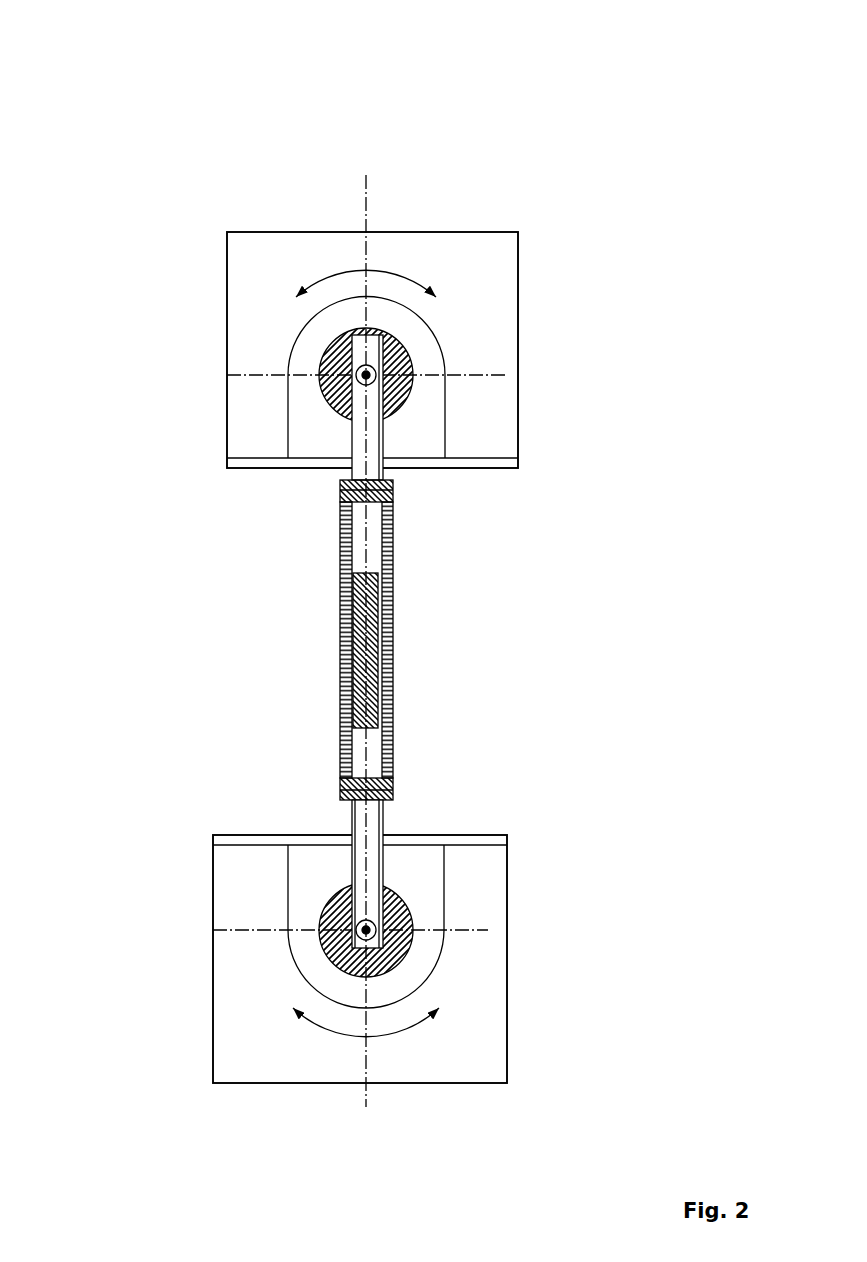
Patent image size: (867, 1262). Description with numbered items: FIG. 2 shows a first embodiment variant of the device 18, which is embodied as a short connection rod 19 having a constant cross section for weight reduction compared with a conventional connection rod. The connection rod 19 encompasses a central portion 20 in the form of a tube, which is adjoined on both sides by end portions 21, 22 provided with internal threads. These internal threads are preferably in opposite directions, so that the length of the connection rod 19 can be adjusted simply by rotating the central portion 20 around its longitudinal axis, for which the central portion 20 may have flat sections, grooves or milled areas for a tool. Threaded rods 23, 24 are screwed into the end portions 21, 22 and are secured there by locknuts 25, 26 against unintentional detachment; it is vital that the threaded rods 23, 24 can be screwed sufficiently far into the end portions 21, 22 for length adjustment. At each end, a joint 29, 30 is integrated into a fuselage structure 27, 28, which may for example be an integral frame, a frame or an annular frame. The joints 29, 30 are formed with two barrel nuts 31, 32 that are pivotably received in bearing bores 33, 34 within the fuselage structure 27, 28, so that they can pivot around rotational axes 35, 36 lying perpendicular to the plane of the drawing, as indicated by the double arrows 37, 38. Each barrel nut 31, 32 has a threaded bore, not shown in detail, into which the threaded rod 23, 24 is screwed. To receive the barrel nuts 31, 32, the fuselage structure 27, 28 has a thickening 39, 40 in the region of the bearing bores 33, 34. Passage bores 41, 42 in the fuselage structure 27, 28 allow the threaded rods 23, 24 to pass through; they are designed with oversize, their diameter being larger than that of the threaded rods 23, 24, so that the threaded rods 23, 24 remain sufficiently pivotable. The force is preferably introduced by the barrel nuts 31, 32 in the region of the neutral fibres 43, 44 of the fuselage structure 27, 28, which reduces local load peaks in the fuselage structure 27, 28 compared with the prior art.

The device 18 is at (476, 78).
The connection rod 19 is at (408, 113).
The central portion 20 is at (393, 642).
The end portion 21 is at (402, 527).
The end portion 22 is at (403, 790).
The threaded rod 23 is at (387, 440).
The threaded rod 24 is at (357, 825).
The locknut 25 is at (340, 483).
The locknut 26 is at (340, 785).
The fuselage structure 27 is at (497, 242).
The fuselage structure 28 is at (230, 1053).
The joint 29 is at (448, 327).
The joint 30 is at (460, 982).
The barrel nut 31 is at (330, 347).
The barrel nut 32 is at (323, 910).
The bearing bore 33 is at (327, 400).
The bearing bore 34 is at (328, 963).
The rotational axis 35 is at (357, 330).
The rotational axis 36 is at (405, 902).
The double arrow 37 is at (343, 270).
The double arrow 38 is at (387, 1037).
The thickening 39 is at (425, 357).
The thickening 40 is at (425, 872).
The passage bore 41 is at (393, 444).
The passage bore 42 is at (393, 862).
The neutral fibres 43 is at (227, 375).
The neutral fibres 44 is at (488, 930).